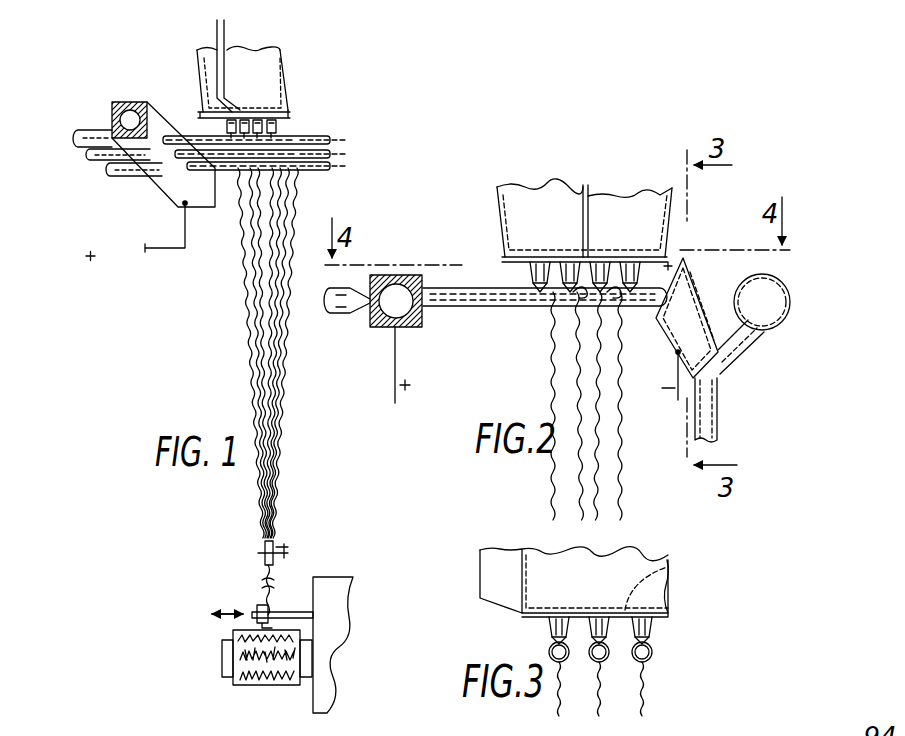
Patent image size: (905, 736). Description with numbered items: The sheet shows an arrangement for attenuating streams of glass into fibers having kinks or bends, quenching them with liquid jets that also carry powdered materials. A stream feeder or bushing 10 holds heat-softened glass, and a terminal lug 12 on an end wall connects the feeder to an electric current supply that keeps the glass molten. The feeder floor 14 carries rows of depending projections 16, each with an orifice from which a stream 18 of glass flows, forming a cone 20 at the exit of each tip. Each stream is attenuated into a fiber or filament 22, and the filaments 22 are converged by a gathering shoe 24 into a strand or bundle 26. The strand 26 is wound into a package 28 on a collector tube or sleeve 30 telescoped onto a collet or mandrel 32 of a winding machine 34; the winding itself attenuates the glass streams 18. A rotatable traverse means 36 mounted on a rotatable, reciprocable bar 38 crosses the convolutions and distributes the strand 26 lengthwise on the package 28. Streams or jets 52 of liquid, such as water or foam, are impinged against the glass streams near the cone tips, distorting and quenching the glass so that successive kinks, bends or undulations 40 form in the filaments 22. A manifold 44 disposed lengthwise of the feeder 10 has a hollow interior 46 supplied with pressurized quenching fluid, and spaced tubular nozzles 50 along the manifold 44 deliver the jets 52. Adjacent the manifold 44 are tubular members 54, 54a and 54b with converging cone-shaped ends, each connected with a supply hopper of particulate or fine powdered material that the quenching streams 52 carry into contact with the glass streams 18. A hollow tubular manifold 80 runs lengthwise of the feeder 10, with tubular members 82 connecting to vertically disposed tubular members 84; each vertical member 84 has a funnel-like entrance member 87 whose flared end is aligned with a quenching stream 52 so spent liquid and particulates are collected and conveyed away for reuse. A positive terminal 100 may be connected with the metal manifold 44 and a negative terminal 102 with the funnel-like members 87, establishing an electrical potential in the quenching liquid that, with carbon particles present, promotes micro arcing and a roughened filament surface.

In FIG. 1, the stream feeder or bushing 10 is at (262, 77).
In FIG. 2, the stream feeder or bushing 10 is at (556, 228).
In FIG. 3, the stream feeder or bushing 10 is at (578, 589).
In FIG. 1, the terminal lugs 12 is at (217, 45).
In FIG. 2, the terminal lugs 12 is at (583, 212).
In FIG. 3, the terminal lugs 12 is at (488, 572).
In FIG. 1, the feeder floor 14 is at (222, 112).
In FIG. 2, the feeder floor 14 is at (500, 222).
In FIG. 3, the feeder floor 14 is at (670, 571).
In FIG. 1, the depending projections 16 is at (274, 128).
In FIG. 2, the depending projections 16 is at (532, 264).
In FIG. 3, the depending projections 16 is at (550, 619).
In FIG. 2, the stream of heat-softened glass 18 is at (593, 302).
In FIG. 3, the stream of heat-softened glass 18 is at (657, 647).
In FIG. 2, the cone 20 is at (563, 293).
In FIG. 3, the cone 20 is at (555, 640).
In FIG. 1, the fibers or continuous filaments 22 is at (259, 283).
In FIG. 2, the fibers or continuous filaments 22 is at (620, 332).
In FIG. 1, the gathering shoe 24 is at (279, 547).
In FIG. 1, the strand or bundle 26 is at (262, 566).
In FIG. 1, the package 28 is at (235, 662).
In FIG. 1, the collector tube or sleeve 30 is at (233, 644).
In FIG. 1, the collet or mandrel 32 is at (222, 655).
In FIG. 1, the winding machine 34 is at (340, 604).
In FIG. 1, the rotatable traverse means 36 is at (260, 606).
In FIG. 1, the rotatable bar or member 38 is at (292, 612).
In FIG. 1, the kinks, bends or undulations 40 is at (236, 353).
In FIG. 2, the kinks, bends or undulations 40 is at (557, 406).
In FIG. 1, the manifold 44 is at (134, 135).
In FIG. 2, the manifold 44 is at (370, 327).
In FIG. 1, the hollow interior 46 is at (126, 116).
In FIG. 2, the hollow interior 46 is at (370, 323).
In FIG. 1, the tubular nozzles 50 is at (206, 154).
In FIG. 2, the tubular nozzles 50 is at (467, 310).
In FIG. 3, the tubular nozzles 50 is at (657, 663).
In FIG. 1, the streams or jets of liquid 52 is at (314, 138).
In FIG. 2, the streams or jets of liquid 52 is at (513, 310).
In FIG. 1, the tubular member 54 is at (100, 158).
In FIG. 1, the tubular member 54a is at (110, 134).
In FIG. 1, the tubular member 54b is at (129, 175).
In FIG. 2, the tubular manifold 80 is at (779, 330).
In FIG. 2, the tubular members 82 is at (742, 358).
In FIG. 2, the vertically disposed tubular members 84 is at (717, 417).
In FIG. 2, the funnel-like entrance member 87 is at (707, 304).
In FIG. 1, the positive terminal 100 is at (145, 248).
In FIG. 2, the positive terminal 100 is at (392, 368).
In FIG. 2, the negative terminal 102 is at (677, 352).